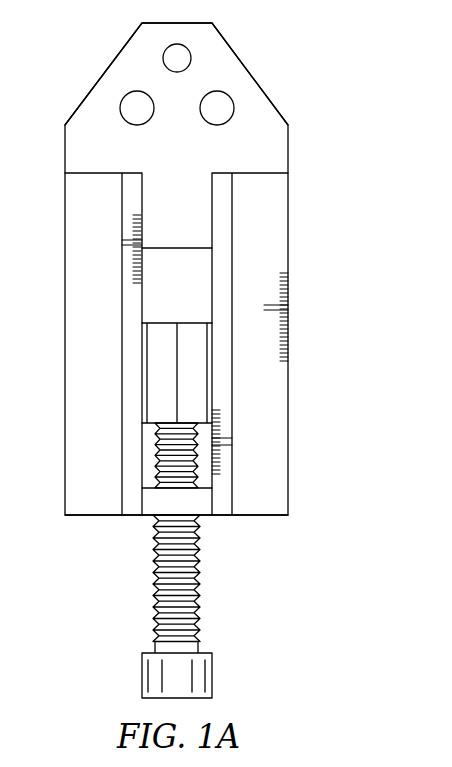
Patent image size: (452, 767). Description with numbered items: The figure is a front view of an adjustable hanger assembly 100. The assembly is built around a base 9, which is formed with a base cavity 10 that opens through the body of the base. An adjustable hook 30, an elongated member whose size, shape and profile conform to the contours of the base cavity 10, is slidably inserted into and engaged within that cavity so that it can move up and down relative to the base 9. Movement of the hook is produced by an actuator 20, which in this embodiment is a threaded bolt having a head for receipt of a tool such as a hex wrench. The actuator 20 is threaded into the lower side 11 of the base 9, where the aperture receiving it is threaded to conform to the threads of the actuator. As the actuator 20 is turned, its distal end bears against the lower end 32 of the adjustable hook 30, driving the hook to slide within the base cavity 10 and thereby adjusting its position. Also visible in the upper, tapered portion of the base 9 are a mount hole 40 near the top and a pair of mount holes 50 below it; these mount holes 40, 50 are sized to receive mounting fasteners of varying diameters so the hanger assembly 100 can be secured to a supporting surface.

The adjustable hanger assembly 100 is at (338, 202).
The base cavity 10 is at (257, 173).
The base 9 is at (93, 142).
The lower side 11 is at (133, 516).
The actuator 20 is at (197, 607).
The adjustable hook 30 is at (183, 383).
The lower end 32 is at (167, 423).
The mount hole 40 is at (180, 56).
The mount holes 50 is at (137, 103).